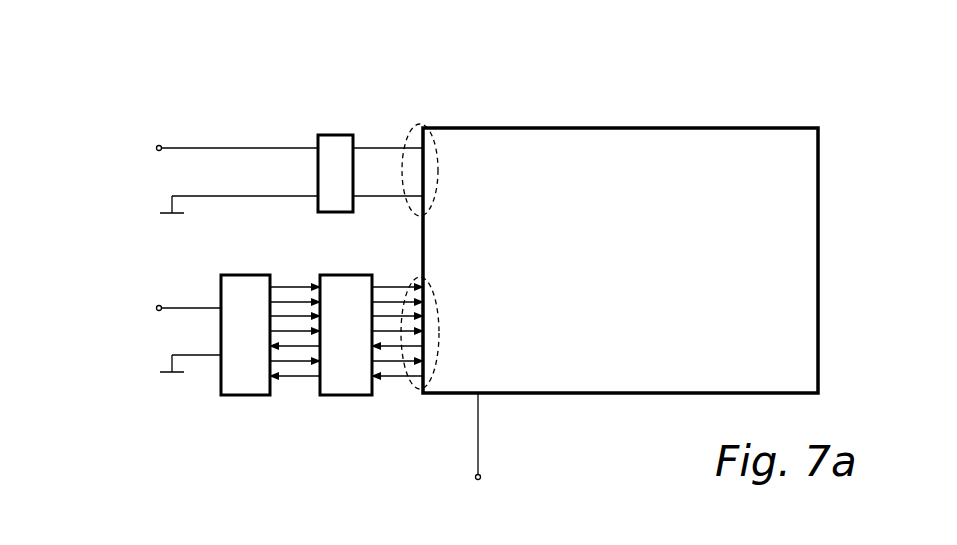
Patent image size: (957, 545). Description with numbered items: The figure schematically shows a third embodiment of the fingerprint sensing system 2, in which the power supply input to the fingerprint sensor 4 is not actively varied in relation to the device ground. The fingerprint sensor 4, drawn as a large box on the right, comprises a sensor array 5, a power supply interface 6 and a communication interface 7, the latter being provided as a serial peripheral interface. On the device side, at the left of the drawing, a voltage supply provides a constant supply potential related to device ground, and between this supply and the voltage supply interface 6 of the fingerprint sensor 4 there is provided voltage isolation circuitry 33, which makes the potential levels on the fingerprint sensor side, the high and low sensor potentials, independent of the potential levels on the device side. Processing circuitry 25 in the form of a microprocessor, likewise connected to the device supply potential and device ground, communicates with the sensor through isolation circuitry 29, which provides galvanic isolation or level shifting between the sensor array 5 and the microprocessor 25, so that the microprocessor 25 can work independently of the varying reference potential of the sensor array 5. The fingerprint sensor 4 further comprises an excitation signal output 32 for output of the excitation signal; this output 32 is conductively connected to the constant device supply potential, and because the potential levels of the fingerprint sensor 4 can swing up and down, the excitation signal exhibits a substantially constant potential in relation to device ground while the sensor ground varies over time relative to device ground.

The fingerprint sensing system 2 is at (618, 80).
The fingerprint sensor 4 is at (775, 98).
The sensor array 5 is at (633, 261).
The power supply interface 6 is at (428, 136).
The communication interface 7 is at (435, 307).
The processing circuitry 25 is at (246, 397).
The isolation circuitry 29 is at (348, 397).
The excitation signal output 32 is at (475, 396).
The voltage isolation circuitry 33 is at (325, 135).